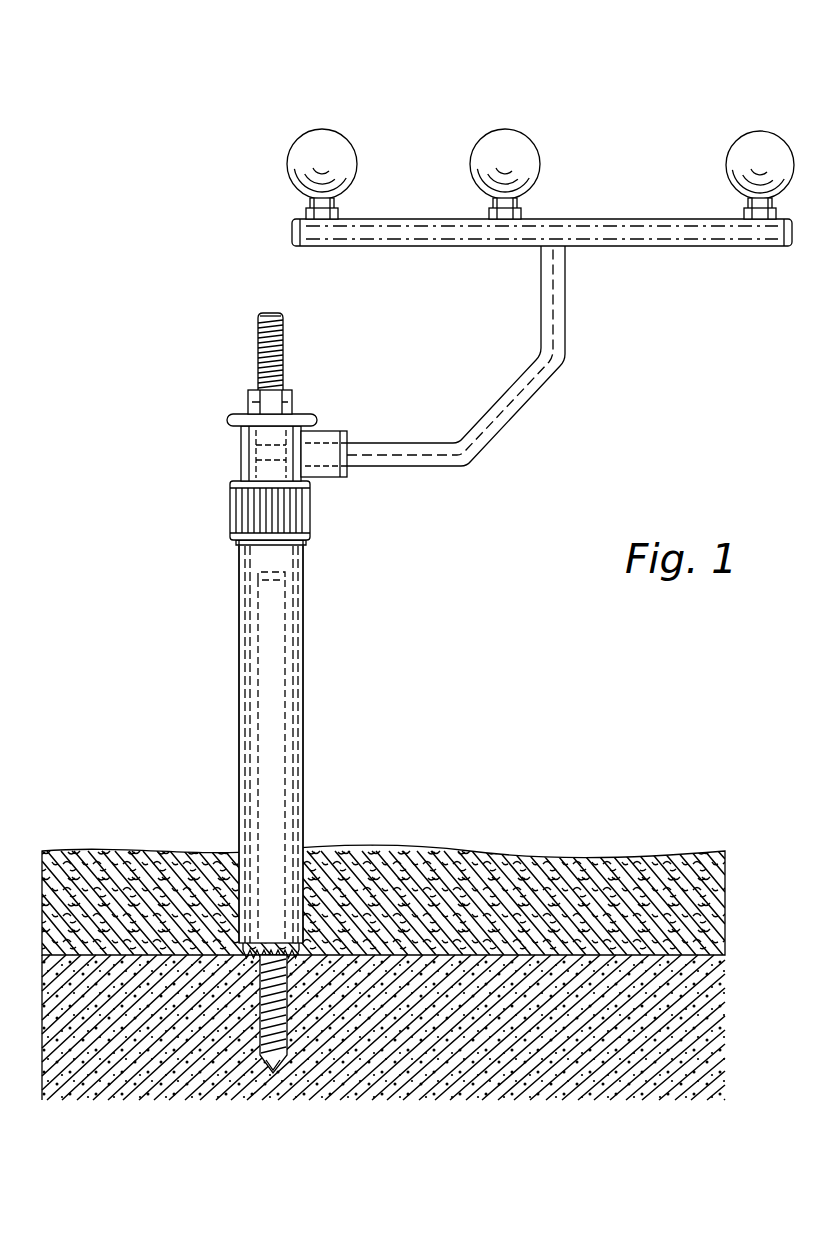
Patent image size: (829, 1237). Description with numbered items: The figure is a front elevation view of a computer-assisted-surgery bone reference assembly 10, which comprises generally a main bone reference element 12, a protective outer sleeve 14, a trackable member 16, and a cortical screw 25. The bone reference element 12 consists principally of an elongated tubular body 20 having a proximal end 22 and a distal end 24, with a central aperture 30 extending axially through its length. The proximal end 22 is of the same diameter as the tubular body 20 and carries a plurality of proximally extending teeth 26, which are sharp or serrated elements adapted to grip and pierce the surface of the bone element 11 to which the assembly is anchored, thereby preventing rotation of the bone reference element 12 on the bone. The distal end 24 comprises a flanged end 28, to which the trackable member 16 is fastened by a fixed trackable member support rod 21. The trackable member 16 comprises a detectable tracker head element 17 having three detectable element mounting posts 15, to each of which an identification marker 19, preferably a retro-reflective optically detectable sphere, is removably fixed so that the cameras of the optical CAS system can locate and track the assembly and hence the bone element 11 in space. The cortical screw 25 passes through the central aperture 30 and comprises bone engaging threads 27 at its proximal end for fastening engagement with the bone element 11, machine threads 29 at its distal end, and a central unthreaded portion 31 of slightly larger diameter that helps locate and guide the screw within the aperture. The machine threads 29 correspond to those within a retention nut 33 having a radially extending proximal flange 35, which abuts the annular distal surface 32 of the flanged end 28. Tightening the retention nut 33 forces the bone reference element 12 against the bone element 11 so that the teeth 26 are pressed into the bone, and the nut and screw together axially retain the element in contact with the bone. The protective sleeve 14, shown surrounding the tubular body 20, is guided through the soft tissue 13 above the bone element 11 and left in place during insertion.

The CAS bone reference assembly 10 is at (193, 210).
The bone element 11 is at (490, 1020).
The bone reference element 12 is at (186, 451).
The soft tissue 13 is at (622, 905).
The protective outer sleeve 14 is at (222, 608).
The detectable element mounting post 15 is at (307, 210).
The trackable member 16 is at (628, 192).
The detectable tracker head element 17 is at (408, 228).
The identification marker 19 is at (337, 150).
The elongated tubular body 20 is at (306, 677).
The trackable member support rod 21 is at (512, 395).
The proximal end 22 is at (310, 948).
The distal end 24 is at (328, 421).
The cortical screw 25 is at (290, 332).
The teeth 26 is at (352, 930).
The bone engaging threads 27 is at (278, 1028).
The flanged end 28 is at (335, 470).
The machine threads 29 is at (258, 343).
The central aperture 30 is at (258, 740).
The central unthreaded portion 31 is at (243, 470).
The annular distal surface 32 is at (278, 408).
The retention nut 33 is at (270, 400).
The proximal flange 35 is at (242, 420).